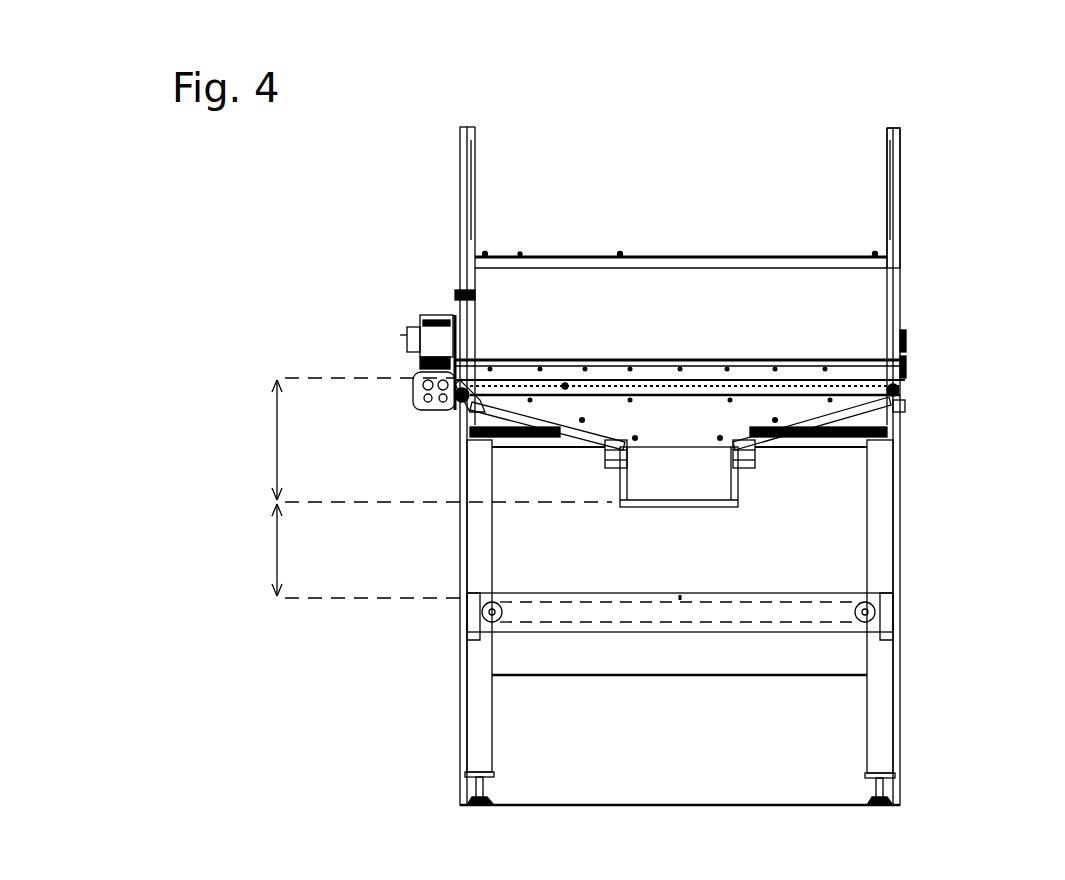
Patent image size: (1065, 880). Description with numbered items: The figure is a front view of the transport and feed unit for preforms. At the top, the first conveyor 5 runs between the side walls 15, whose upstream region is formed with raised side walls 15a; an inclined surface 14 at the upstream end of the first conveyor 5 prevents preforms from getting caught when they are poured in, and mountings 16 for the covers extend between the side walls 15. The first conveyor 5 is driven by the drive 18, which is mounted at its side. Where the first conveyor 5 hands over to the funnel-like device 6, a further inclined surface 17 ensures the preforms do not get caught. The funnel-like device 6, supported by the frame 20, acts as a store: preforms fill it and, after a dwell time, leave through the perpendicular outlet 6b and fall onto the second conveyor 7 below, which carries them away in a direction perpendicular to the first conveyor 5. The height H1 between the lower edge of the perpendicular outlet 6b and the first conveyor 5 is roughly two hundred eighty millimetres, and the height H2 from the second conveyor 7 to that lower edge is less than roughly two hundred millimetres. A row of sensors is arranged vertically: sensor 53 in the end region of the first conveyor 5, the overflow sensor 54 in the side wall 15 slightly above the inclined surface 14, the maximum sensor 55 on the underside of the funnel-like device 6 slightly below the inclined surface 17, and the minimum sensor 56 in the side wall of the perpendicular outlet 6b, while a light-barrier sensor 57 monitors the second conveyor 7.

The first conveyor 5 is at (510, 384).
The funnel-like device 6 is at (575, 445).
The perpendicular outlet 6b is at (742, 493).
The second conveyor 7 is at (548, 610).
The inclined surface 14 is at (850, 372).
The side wall 15 is at (905, 268).
The raised side wall 15a is at (893, 130).
The mounting 16 is at (855, 250).
The inclined surface 17 is at (565, 385).
The drive 18 is at (407, 335).
The frame 20 is at (880, 707).
The sensor S3 53 is at (910, 376).
The overflow sensor S4 54 is at (910, 345).
The maximum sensor S5 55 is at (910, 411).
The minimum sensor S6 56 is at (758, 462).
The sensor S7 57 is at (680, 598).
The height H1 is at (340, 439).
The height H2 is at (417, 550).